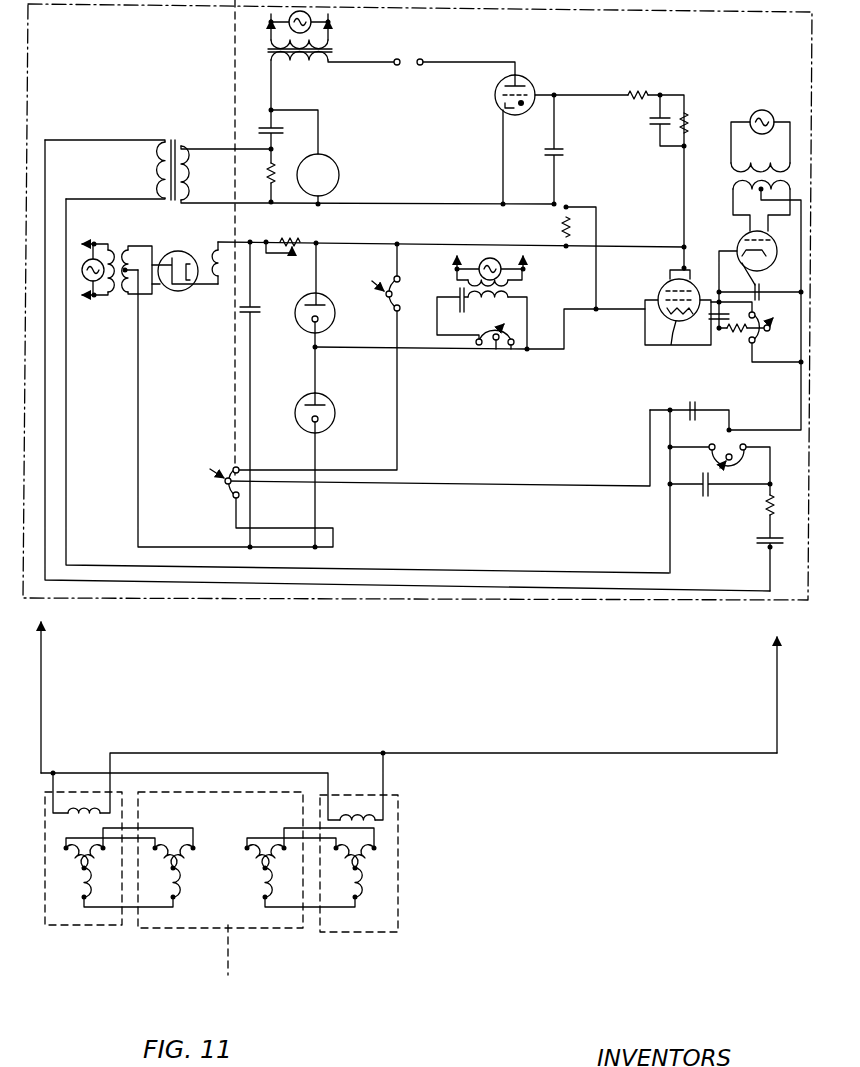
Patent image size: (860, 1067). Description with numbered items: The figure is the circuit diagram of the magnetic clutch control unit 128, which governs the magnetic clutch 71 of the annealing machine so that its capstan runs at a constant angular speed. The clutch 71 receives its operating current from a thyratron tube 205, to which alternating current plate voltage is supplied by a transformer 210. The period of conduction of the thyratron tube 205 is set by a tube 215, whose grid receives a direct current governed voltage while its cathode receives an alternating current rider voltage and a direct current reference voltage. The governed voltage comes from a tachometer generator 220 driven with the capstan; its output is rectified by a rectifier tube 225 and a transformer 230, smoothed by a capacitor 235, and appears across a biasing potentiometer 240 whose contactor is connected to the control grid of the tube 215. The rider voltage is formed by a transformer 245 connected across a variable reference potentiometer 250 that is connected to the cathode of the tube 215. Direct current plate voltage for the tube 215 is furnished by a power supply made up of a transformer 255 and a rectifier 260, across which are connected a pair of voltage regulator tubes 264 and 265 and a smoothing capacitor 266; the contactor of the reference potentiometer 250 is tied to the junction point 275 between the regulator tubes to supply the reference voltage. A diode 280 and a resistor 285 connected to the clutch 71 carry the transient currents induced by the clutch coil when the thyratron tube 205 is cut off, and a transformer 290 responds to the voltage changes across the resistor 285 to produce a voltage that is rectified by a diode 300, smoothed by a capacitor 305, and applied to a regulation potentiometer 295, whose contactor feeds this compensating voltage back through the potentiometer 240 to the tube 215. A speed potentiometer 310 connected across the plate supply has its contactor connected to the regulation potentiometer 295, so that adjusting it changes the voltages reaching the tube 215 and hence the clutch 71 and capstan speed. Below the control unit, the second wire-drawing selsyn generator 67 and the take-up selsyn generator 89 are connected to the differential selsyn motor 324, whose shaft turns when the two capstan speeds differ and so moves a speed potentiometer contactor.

The magnetic clutch 71 is at (326, 178).
The thyratron tube 205 is at (536, 86).
The transformer 210 is at (338, 48).
The tube 215 is at (671, 345).
The tachometer generator 220 is at (762, 109).
The rectifier tube 225 is at (746, 236).
The transformer 230 is at (730, 179).
The capacitor 235 is at (742, 248).
The biasing potentiometer 240 is at (766, 356).
The transformer 245 is at (514, 292).
The reference potentiometer 250 is at (472, 336).
The transformer 255 is at (116, 302).
The rectifier 260 is at (181, 292).
The voltage regulator tube 264 is at (326, 300).
The voltage regulator tube 265 is at (334, 414).
The capacitor 266 is at (254, 316).
The junction point 275 is at (318, 349).
The diode 280 is at (268, 125).
The resistor 285 is at (268, 176).
The transformer 290 is at (185, 118).
The regulation potentiometer 295 is at (708, 456).
The diode 300 is at (765, 547).
The capacitor 305 is at (712, 497).
The speed potentiometer 310 is at (212, 476).
The magnetic clutch control unit 128 is at (562, 602).
The second wire-drawing selsyn generator 67 is at (106, 926).
The differential selsyn motor 324 is at (210, 929).
The take-up selsyn generator 89 is at (379, 931).